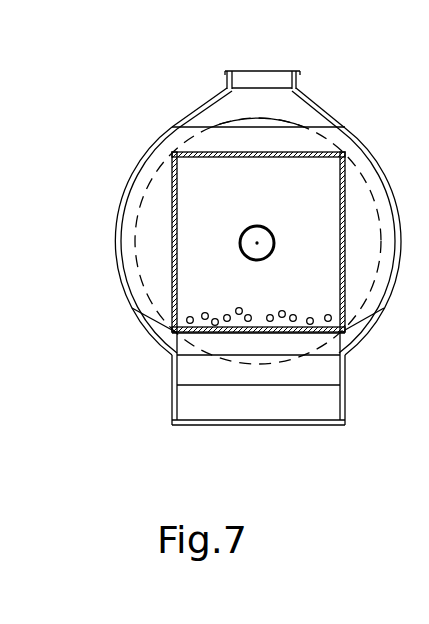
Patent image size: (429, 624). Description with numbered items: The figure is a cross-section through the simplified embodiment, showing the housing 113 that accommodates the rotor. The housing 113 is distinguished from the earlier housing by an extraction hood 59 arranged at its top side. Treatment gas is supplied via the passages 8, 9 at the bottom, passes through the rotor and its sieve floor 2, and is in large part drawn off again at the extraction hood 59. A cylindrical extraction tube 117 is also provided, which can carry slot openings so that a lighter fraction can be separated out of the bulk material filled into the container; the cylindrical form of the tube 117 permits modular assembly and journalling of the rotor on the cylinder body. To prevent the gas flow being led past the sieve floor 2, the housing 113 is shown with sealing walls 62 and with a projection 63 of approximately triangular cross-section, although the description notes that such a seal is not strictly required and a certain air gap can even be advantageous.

The sieve floor 2 is at (307, 340).
The passage 8 is at (202, 408).
The passage 9 is at (172, 376).
The extraction hood 59 is at (224, 82).
The sealing wall 62 is at (352, 142).
The projection 63 is at (164, 336).
The housing 113 is at (319, 104).
The extraction tube 117 is at (255, 224).